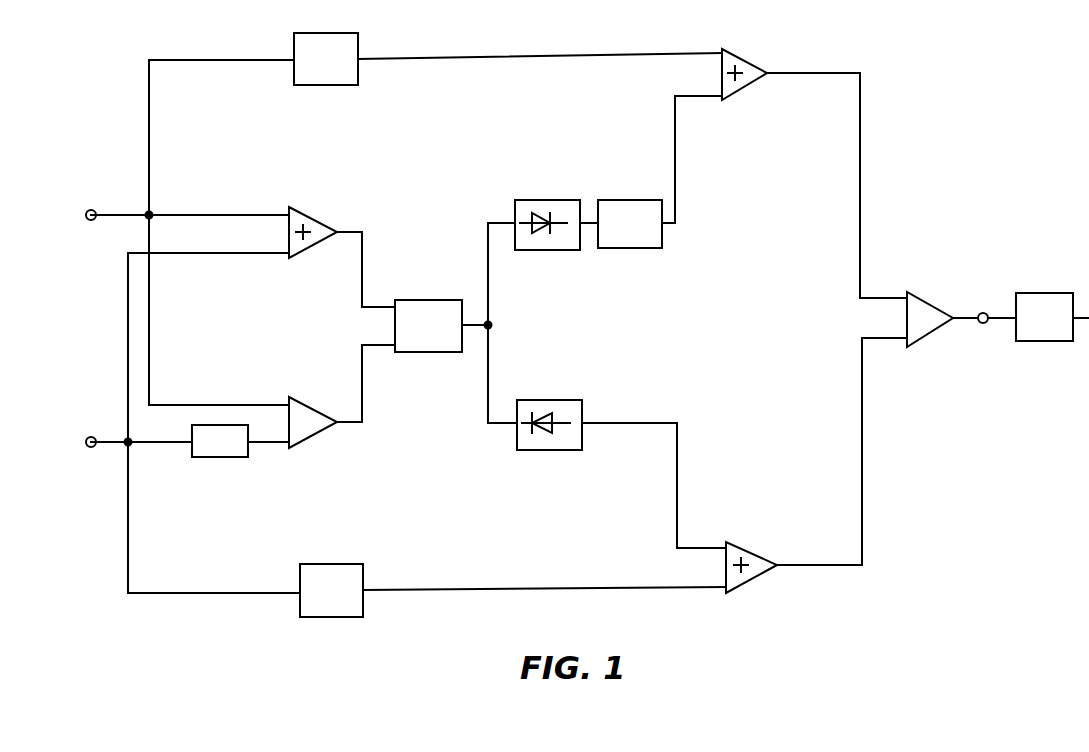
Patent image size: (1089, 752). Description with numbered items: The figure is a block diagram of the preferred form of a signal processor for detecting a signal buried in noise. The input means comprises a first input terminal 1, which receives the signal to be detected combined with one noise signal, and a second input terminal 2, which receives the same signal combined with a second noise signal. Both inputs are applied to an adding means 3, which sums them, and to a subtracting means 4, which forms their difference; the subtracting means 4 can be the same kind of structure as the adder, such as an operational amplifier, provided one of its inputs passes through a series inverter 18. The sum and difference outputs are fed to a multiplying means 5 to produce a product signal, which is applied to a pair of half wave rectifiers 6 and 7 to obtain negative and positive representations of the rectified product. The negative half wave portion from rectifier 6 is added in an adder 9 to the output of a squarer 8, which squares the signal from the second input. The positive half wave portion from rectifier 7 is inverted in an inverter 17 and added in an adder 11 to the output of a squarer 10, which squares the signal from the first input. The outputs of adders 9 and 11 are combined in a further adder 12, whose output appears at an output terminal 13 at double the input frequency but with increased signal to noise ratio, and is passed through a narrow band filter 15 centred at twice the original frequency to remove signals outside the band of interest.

The first input terminal 1 is at (94, 210).
The second input terminal 2 is at (94, 437).
The adding means 3 is at (308, 216).
The subtracting means 4 is at (316, 414).
The multiplying means 5 is at (418, 299).
The half wave rectifier 6 is at (536, 398).
The half wave rectifier 7 is at (554, 199).
The squarer 8 is at (320, 617).
The adder 9 is at (745, 585).
The squarer 10 is at (323, 33).
The adder 11 is at (742, 56).
The adder 12 is at (923, 303).
The output terminal 13 is at (983, 313).
The narrow band filter 15 is at (1033, 293).
The inverter 17 is at (648, 199).
The series inverter 18 is at (207, 457).